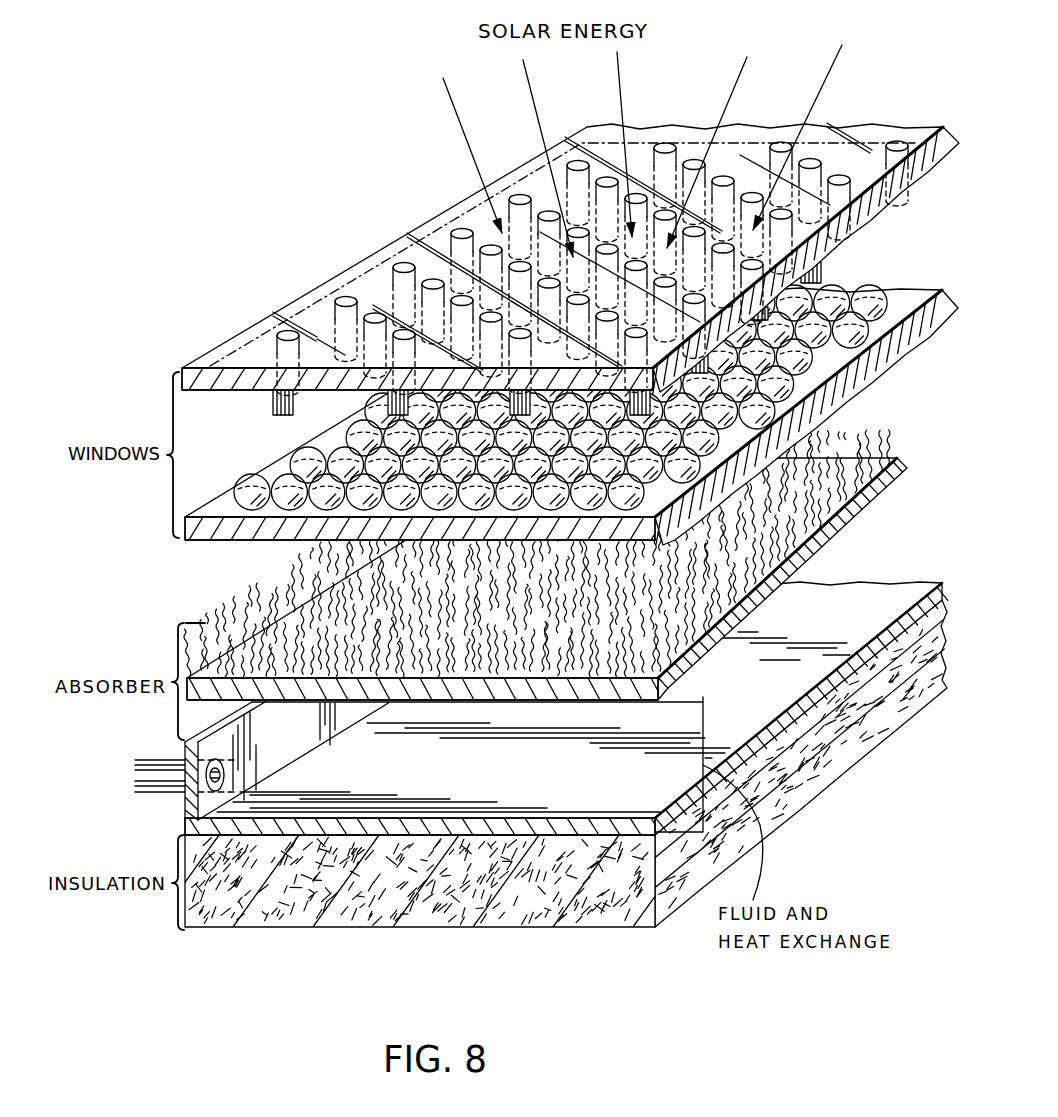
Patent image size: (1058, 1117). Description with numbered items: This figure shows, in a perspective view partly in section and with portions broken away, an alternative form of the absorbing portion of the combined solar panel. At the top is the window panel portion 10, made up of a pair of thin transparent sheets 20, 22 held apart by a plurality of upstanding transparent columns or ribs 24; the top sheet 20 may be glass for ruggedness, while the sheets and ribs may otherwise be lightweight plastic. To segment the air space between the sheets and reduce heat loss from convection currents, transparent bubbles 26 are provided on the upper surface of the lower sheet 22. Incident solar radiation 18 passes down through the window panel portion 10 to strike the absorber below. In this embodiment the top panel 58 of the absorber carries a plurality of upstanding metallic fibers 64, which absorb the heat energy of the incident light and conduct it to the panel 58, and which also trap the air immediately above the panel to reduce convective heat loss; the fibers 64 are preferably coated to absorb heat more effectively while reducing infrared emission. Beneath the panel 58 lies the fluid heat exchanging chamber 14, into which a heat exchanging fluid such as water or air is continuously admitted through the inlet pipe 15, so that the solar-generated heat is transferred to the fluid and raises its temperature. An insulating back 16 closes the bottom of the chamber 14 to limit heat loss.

The window panel portion 10 is at (526, 536).
The fluid heat exchanging chamber 14 is at (180, 812).
The inlet pipe 15 is at (160, 794).
The insulating back 16 is at (166, 908).
The incident solar radiation 18 is at (443, 262).
The top sheet 20 is at (256, 326).
The transparent sheet 22 is at (262, 541).
The upstanding columns or ribs 24 is at (272, 413).
The transparent bubbles 26 is at (250, 491).
The top panel 58 is at (764, 594).
The upstanding metallic fibers 64 is at (878, 434).